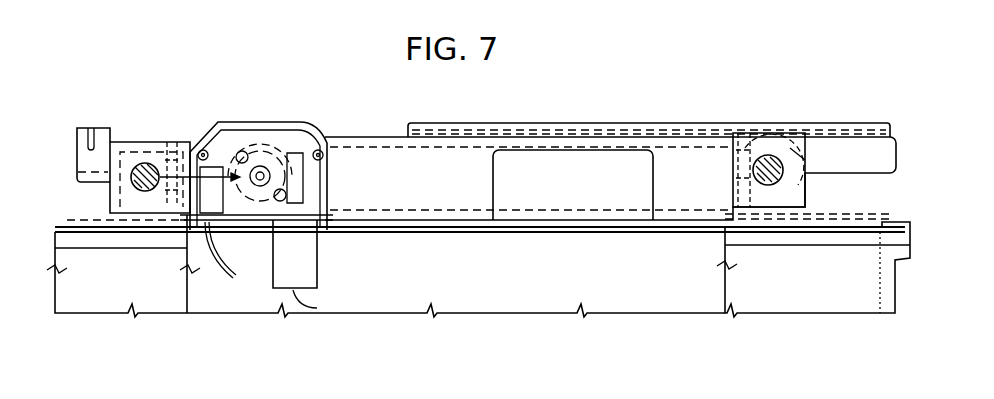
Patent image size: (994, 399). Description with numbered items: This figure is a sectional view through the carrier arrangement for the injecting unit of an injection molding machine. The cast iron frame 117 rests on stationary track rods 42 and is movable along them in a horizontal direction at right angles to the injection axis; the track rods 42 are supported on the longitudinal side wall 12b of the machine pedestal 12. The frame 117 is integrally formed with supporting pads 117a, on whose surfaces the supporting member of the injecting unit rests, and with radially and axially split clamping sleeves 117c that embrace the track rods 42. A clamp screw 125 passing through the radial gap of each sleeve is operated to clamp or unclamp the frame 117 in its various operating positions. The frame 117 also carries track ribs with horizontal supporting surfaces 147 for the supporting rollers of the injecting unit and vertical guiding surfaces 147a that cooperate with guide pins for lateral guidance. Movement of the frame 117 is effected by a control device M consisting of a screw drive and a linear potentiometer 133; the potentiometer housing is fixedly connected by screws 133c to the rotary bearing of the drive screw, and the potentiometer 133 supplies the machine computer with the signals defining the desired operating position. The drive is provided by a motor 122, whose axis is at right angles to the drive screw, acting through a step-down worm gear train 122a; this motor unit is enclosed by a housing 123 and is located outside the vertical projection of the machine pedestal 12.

The machine pedestal 12 is at (667, 278).
The longitudinal side wall 12b is at (472, 284).
The track rod 42 is at (145, 162).
The cast iron frame 117 is at (352, 137).
The supporting pad 117a is at (105, 128).
The clamping sleeve 117c is at (790, 148).
The motor 122 is at (288, 277).
The worm gear train 122a is at (335, 178).
The housing 123 is at (282, 123).
The clamp screw 125 is at (173, 140).
The linear potentiometer 133 is at (192, 240).
The screws 133c is at (206, 155).
The horizontal supporting surfaces 147 is at (712, 122).
The vertical guiding surfaces 147a is at (648, 122).
The control device M is at (300, 116).